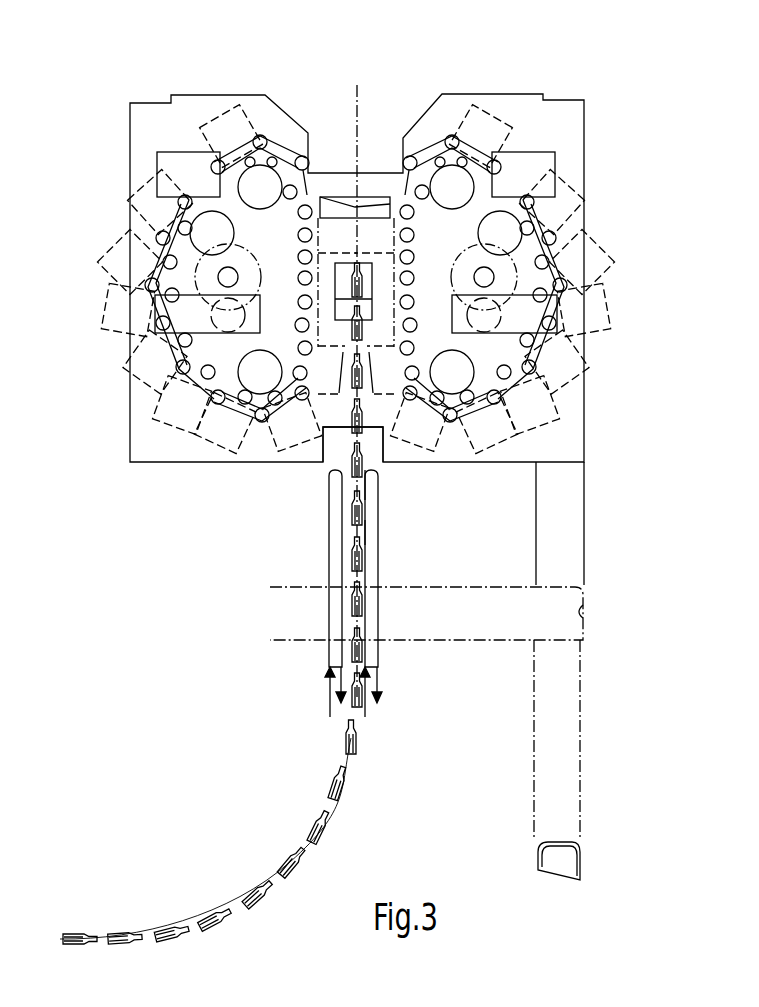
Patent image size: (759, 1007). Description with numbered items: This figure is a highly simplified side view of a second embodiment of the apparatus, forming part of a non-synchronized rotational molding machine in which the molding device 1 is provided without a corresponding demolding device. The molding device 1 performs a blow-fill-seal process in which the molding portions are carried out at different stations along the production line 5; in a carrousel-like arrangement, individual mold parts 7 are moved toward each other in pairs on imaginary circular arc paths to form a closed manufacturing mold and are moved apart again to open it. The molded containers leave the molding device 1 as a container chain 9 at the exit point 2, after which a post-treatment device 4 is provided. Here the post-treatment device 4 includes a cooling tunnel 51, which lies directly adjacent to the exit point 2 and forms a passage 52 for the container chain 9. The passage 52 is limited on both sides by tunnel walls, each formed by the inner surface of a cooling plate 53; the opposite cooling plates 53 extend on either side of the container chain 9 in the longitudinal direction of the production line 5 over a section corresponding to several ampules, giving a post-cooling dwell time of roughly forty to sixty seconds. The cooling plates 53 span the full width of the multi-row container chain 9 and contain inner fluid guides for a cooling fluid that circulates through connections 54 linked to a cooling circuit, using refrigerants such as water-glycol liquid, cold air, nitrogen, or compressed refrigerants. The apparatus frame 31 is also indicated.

The molding device 1 is at (603, 163).
The exit point 2 is at (340, 455).
The post-treatment device 4 is at (300, 566).
The production line 5 is at (374, 98).
The mold parts 7 is at (488, 115).
The container chain 9 is at (330, 455).
The apparatus frame 31 is at (583, 618).
The cooling tunnel 51 is at (363, 493).
The passage 52 is at (363, 532).
The cooling plates 53 is at (370, 576).
The connections 54 is at (323, 720).